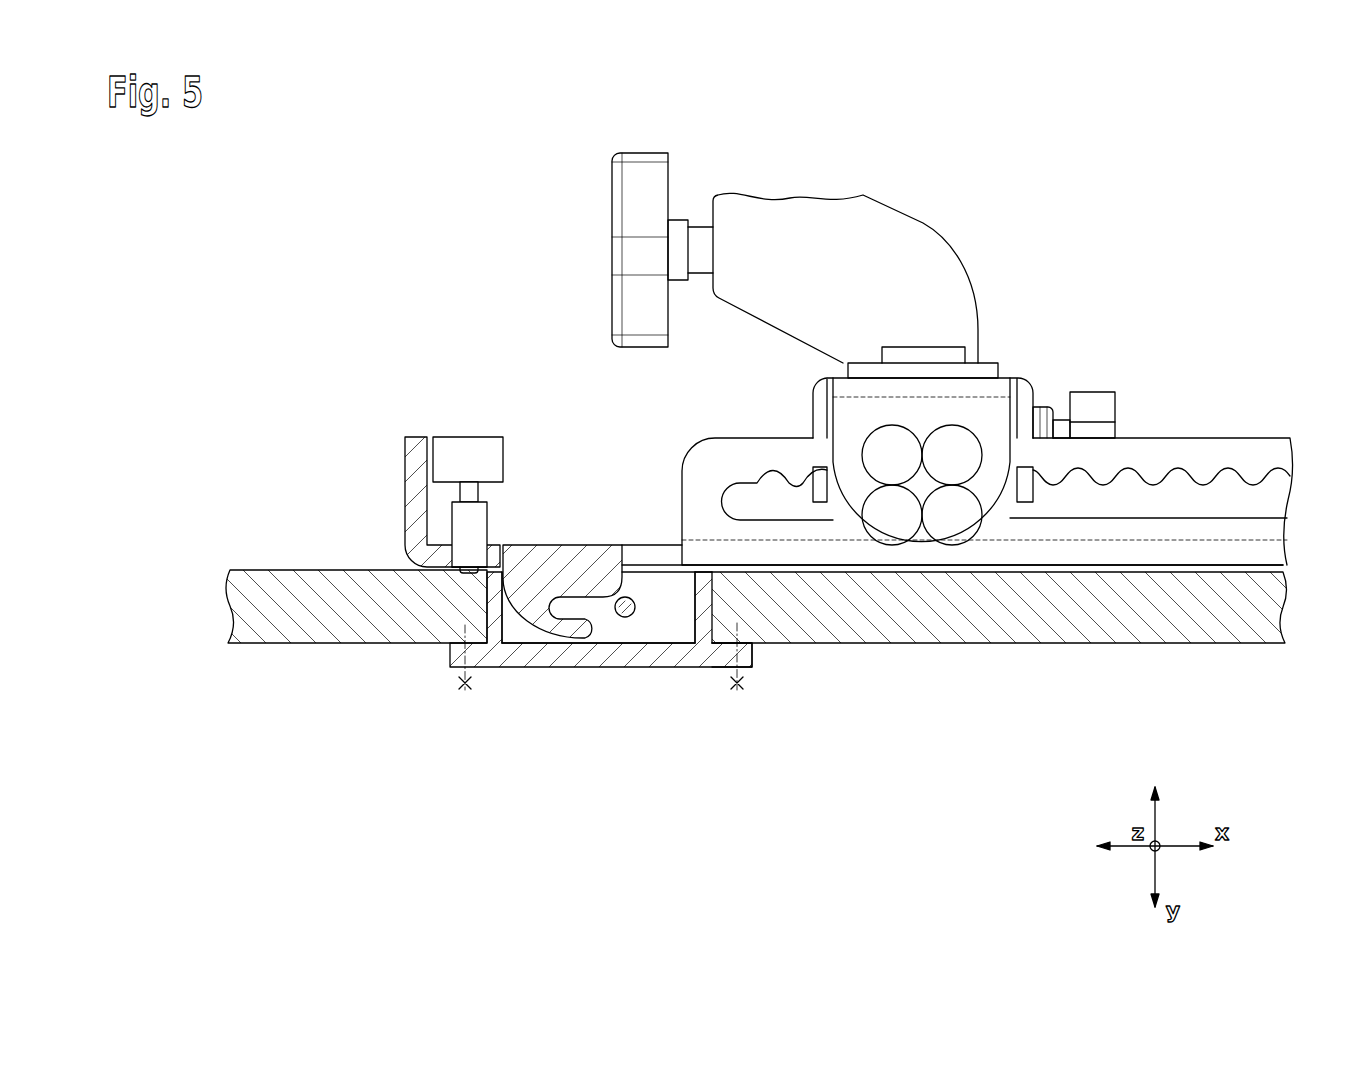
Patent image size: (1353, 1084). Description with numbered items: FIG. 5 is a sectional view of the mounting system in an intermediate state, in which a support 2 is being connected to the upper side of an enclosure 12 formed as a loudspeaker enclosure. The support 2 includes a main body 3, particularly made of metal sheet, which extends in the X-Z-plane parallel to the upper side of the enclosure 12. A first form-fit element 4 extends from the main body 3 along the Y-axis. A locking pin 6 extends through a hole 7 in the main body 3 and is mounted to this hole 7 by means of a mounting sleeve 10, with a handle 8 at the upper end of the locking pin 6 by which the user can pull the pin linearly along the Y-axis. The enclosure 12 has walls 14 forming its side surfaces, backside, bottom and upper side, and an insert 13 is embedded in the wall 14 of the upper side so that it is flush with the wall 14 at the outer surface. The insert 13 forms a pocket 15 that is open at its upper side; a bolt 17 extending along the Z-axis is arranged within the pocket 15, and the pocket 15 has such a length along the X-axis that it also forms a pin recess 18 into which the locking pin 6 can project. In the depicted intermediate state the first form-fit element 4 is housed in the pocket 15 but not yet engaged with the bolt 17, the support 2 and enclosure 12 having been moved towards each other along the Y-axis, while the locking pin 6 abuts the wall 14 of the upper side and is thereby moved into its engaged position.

The support 2 is at (1180, 450).
The main body 3 is at (633, 552).
The first form-fit element 4 is at (578, 632).
The locking pin 6 is at (467, 572).
The hole 7 is at (476, 560).
The handle 8 is at (465, 447).
The mounting sleeve 10 is at (472, 518).
The enclosure 12 is at (1233, 660).
The insert 13 is at (745, 655).
The wall 14 is at (298, 617).
The pocket 15 is at (655, 615).
The bolt 17 is at (627, 618).
The pin recess 18 is at (512, 633).